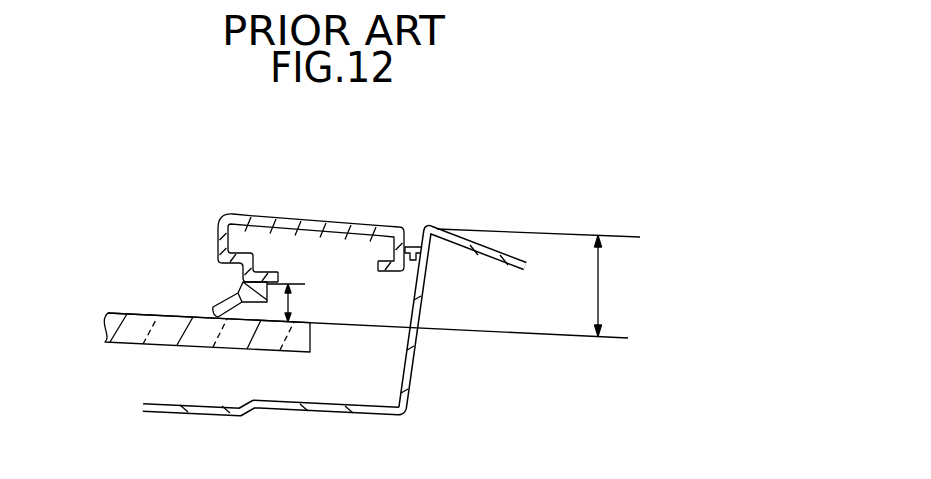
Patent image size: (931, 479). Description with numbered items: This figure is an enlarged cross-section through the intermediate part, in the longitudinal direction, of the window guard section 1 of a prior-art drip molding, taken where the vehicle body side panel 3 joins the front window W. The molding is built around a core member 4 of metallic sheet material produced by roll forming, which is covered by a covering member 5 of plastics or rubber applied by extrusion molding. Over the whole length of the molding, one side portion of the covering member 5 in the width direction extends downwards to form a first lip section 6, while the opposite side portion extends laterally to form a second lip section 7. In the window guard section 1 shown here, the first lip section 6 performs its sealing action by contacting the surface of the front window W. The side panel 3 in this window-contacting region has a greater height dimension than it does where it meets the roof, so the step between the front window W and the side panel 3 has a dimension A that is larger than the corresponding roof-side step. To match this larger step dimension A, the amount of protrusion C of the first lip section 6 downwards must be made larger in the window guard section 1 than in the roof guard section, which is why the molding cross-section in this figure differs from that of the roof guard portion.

The window guard section 1 is at (311, 219).
The side panel 3 is at (423, 303).
The core member 4 is at (338, 240).
The covering member 5 is at (273, 213).
The first lip section 6 is at (225, 300).
The second lip section 7 is at (421, 243).
The front window W is at (143, 312).
The step dimension A is at (609, 285).
The amount of protrusion C is at (290, 303).